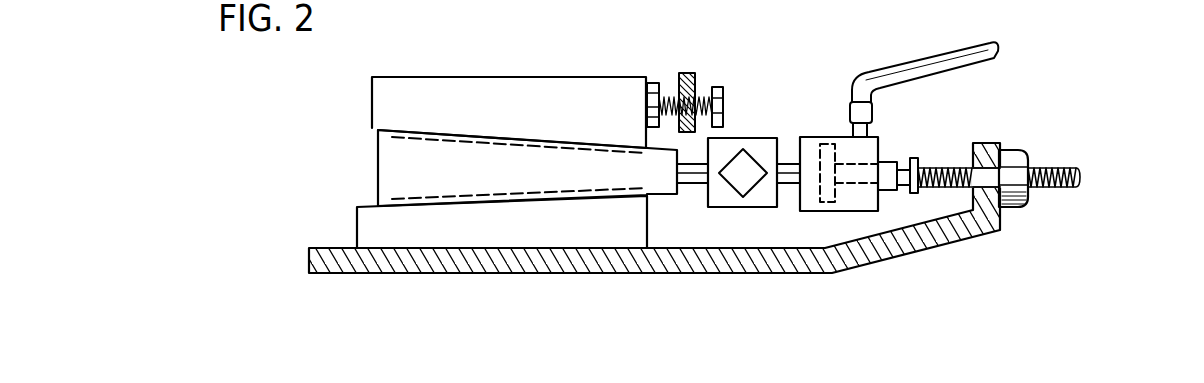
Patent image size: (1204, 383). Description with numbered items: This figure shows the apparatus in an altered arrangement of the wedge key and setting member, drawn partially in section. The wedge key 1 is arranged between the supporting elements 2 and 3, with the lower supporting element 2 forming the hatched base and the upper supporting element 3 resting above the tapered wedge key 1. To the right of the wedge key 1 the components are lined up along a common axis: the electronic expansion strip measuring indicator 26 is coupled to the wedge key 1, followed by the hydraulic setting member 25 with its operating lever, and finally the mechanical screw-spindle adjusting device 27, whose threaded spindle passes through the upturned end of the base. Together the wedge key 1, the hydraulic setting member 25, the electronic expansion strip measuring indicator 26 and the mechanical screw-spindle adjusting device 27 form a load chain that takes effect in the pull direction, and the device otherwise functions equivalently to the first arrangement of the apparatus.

The wedge key 1 is at (557, 179).
The supporting element 2 is at (517, 235).
The supporting element 3 is at (416, 86).
The hydraulic setting member 25 is at (842, 140).
The electronic expansion strip measuring indicator 26 is at (771, 142).
The mechanical screw-spindle adjusting device 27 is at (1045, 167).